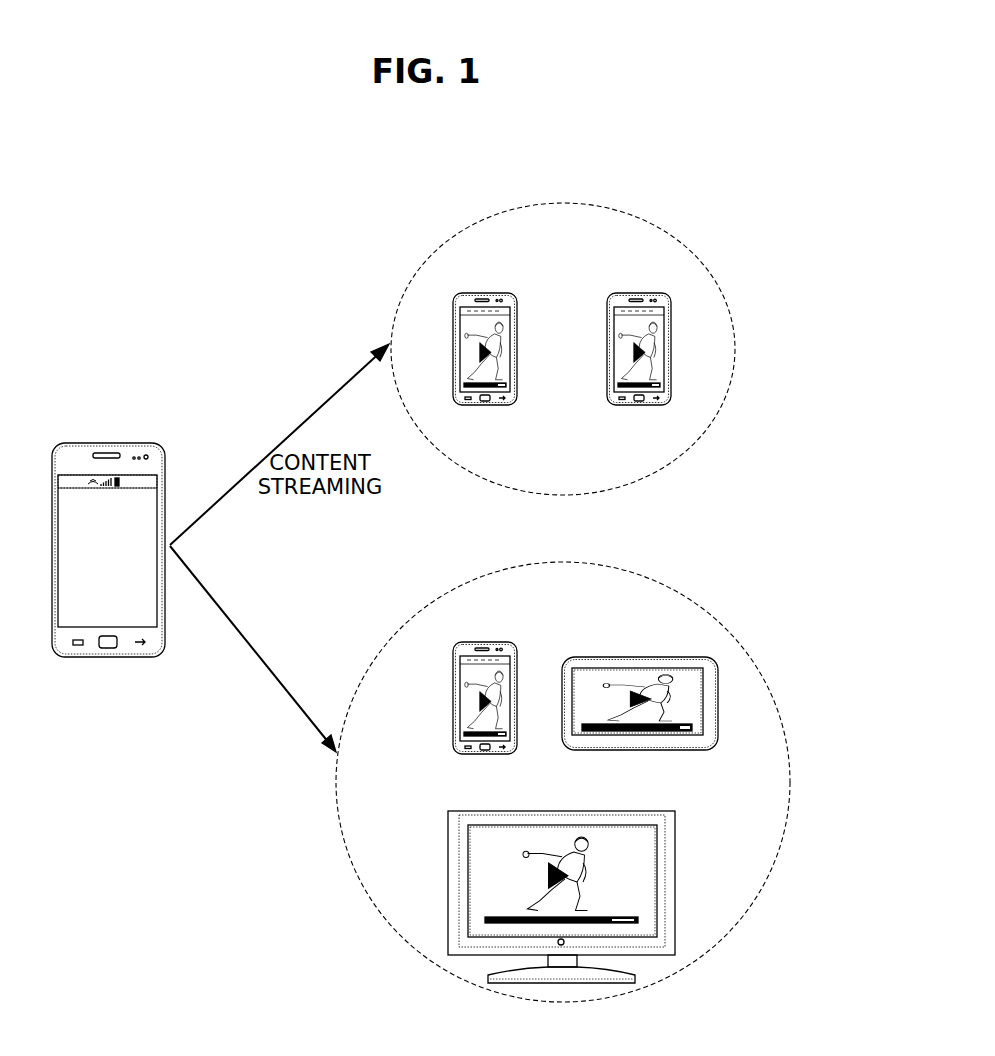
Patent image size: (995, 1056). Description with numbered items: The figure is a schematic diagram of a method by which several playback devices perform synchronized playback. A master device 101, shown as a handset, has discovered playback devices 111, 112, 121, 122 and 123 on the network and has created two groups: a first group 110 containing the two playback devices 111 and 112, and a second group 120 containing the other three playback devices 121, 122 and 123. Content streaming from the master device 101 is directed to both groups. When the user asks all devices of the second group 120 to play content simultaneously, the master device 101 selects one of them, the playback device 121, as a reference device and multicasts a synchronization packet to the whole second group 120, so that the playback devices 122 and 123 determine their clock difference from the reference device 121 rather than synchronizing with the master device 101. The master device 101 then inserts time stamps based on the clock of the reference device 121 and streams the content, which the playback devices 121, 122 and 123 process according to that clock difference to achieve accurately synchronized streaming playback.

The master device 101 is at (107, 441).
The first group 110 is at (563, 334).
The playback device 111 is at (485, 292).
The playback device 112 is at (639, 292).
The second group 120 is at (563, 764).
The playback device (reference device) 121 is at (485, 641).
The playback device 122 is at (640, 656).
The playback device 123 is at (615, 809).